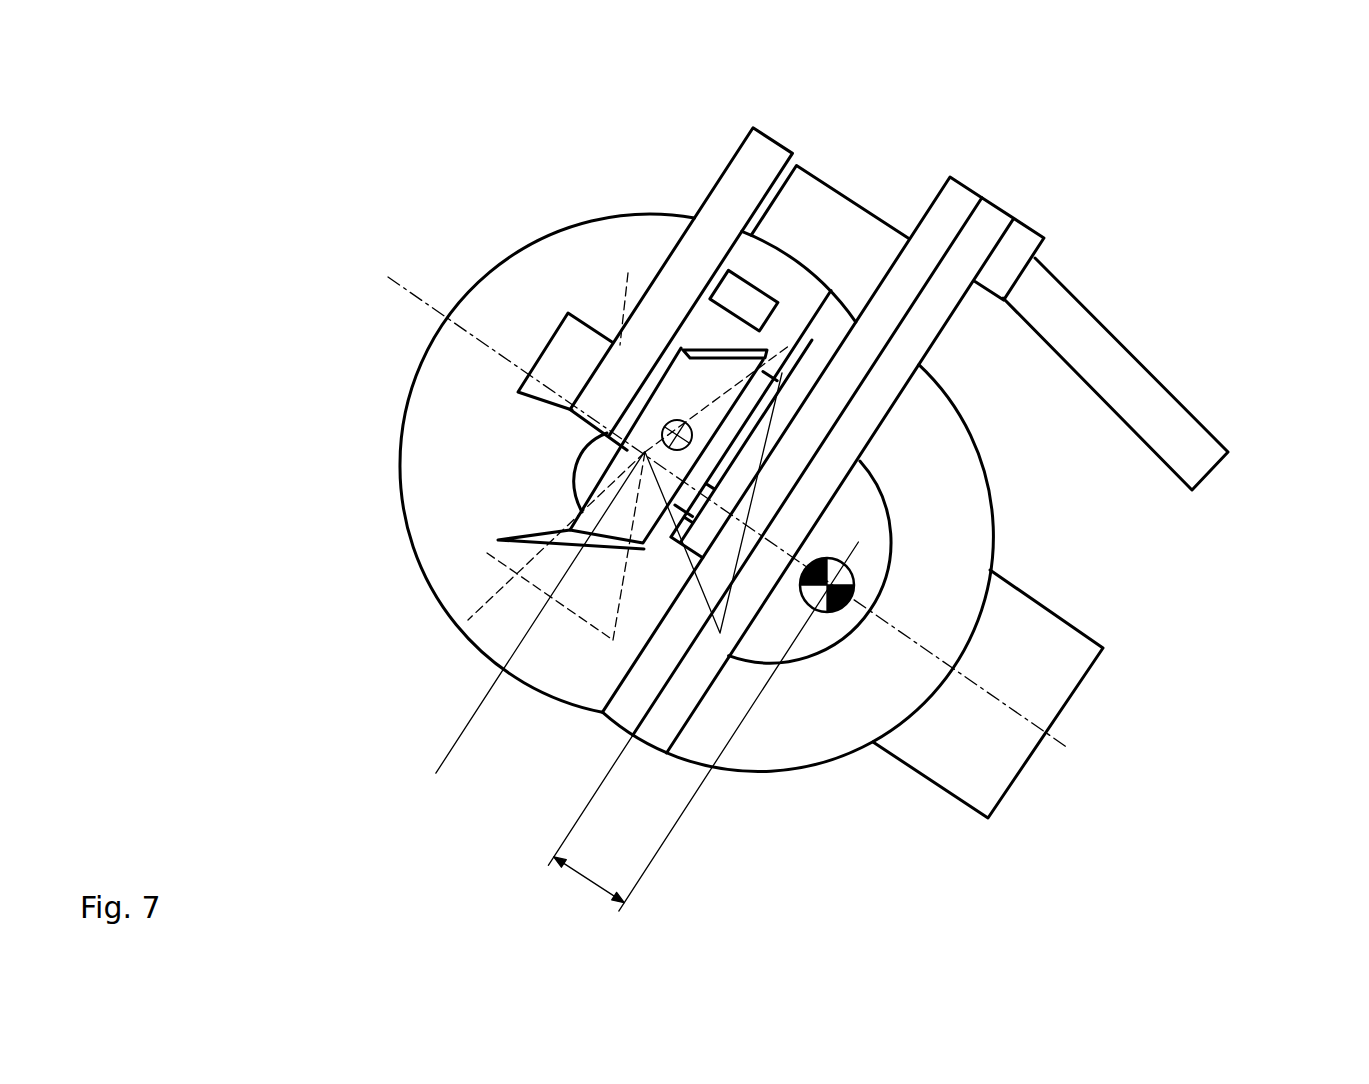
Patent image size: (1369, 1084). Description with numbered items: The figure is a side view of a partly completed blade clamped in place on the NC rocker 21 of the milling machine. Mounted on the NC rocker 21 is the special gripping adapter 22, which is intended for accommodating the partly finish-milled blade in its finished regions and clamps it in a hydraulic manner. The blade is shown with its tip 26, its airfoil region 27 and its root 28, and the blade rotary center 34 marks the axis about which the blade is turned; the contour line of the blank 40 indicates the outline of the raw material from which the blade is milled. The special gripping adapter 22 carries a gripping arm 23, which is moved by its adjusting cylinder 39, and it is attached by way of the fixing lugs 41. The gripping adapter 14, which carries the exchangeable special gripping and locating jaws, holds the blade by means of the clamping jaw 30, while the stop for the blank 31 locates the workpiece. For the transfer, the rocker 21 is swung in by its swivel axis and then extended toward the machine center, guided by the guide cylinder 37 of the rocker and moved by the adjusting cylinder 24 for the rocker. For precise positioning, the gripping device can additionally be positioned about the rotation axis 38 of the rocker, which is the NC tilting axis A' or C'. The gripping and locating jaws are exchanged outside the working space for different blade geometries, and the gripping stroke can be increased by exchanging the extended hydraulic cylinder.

The gripping adapter 14 is at (462, 370).
The NC rocker 21 is at (963, 255).
The special gripping adapter 22 is at (937, 225).
The gripping arm 23 is at (673, 290).
The adjusting cylinder 24 is at (1125, 385).
The tip of the blade 26 is at (497, 548).
The airfoil region of the blade 27 is at (593, 468).
The root of the blade 28 is at (553, 495).
The clamping jaw 30 is at (568, 360).
The stop for blank 31 is at (737, 292).
The blade rotary center 34 is at (662, 430).
The guide cylinder 37 is at (1018, 682).
The rotation axis 38 is at (825, 612).
The adjusting cylinder 39 is at (832, 215).
The contour line of the blank 40 is at (630, 740).
The fixing lugs 41 is at (720, 633).